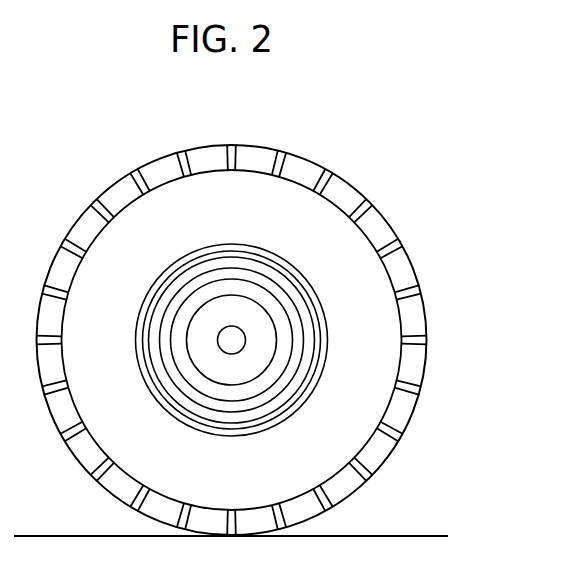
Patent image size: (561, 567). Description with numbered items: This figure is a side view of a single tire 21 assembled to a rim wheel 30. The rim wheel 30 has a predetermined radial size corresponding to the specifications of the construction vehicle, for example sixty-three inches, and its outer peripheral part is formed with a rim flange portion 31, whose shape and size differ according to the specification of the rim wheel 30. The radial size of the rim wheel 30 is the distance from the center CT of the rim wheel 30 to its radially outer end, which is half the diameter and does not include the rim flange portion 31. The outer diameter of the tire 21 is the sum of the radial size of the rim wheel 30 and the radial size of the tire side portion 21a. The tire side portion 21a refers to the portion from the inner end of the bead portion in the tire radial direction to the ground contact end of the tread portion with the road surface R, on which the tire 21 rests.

The tire 21 is at (392, 220).
The tire side portion 21a is at (245, 212).
The rim wheel 30 is at (263, 340).
The rim flange portion 31 is at (307, 297).
The center of the rim wheel CT is at (232, 339).
The road surface R is at (417, 536).